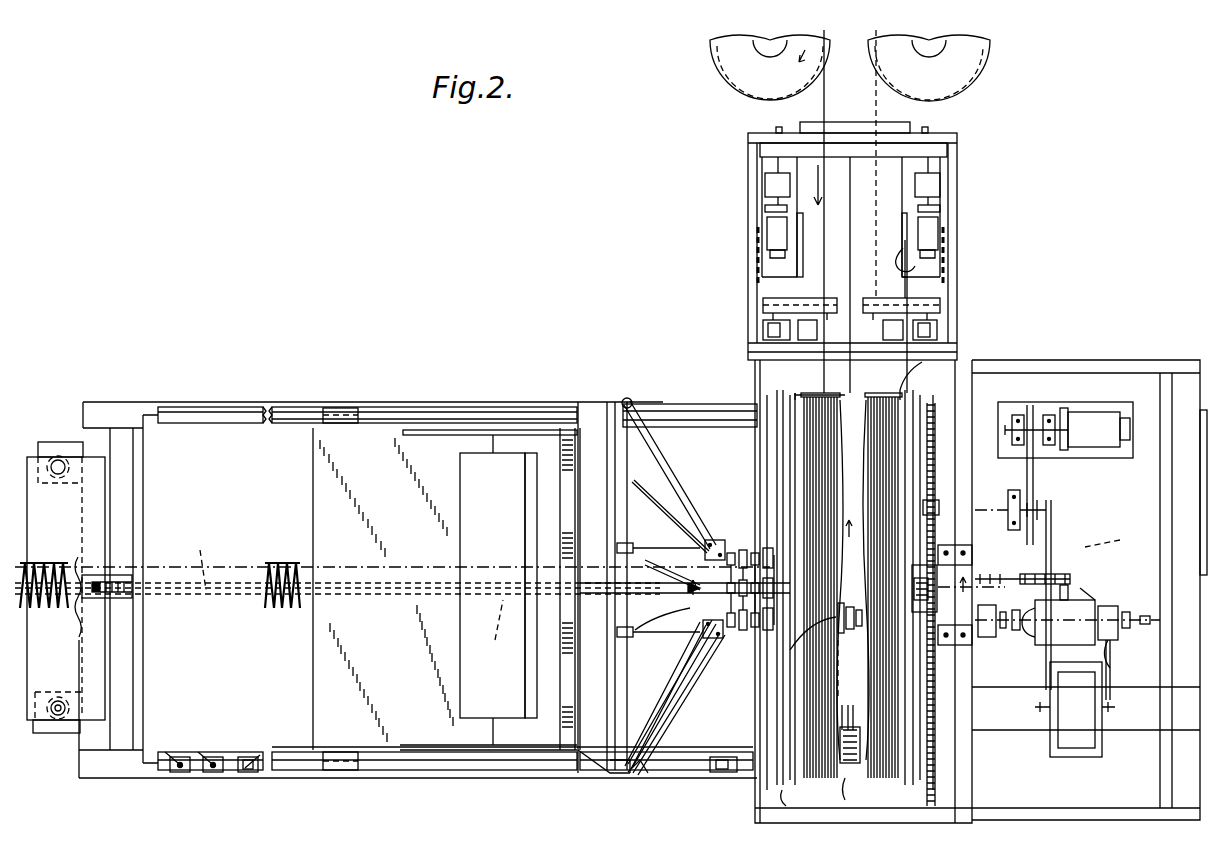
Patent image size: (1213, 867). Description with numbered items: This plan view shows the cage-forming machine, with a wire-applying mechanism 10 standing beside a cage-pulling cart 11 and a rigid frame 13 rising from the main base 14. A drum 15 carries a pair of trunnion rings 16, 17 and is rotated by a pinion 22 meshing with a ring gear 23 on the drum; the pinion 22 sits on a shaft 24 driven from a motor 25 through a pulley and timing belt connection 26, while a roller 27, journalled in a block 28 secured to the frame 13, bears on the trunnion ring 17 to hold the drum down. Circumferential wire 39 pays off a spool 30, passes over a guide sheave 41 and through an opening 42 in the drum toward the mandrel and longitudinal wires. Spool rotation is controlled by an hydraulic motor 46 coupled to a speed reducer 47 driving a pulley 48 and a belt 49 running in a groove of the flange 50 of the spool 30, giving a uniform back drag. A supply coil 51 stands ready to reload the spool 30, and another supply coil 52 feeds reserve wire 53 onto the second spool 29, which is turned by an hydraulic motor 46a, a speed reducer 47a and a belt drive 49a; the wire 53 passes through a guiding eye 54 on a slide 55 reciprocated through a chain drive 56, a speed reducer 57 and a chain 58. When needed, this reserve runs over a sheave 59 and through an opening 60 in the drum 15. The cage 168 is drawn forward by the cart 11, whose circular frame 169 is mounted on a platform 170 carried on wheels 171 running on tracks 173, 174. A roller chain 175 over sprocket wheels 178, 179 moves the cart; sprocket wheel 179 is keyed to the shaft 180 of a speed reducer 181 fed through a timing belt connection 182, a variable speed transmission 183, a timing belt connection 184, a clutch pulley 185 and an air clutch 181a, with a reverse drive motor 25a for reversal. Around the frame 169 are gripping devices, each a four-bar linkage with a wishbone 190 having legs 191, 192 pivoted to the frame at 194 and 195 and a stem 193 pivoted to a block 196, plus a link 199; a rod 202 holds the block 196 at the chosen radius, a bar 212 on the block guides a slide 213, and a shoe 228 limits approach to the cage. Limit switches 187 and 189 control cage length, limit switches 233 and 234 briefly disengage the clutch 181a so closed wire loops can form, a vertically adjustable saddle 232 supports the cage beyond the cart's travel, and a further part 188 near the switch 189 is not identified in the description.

The wire-applying mechanism 10 is at (1032, 283).
The cage-pulling cart 11 is at (595, 382).
The rigid frame 13 is at (982, 772).
The main base 14 is at (1145, 353).
The drum 15 is at (847, 770).
The trunnion ring 16 is at (785, 392).
The trunnion ring 17 is at (862, 785).
The pinion 22 is at (938, 500).
The ring gear 23 is at (930, 402).
The shaft 24 is at (1012, 505).
The motor 25 is at (1098, 418).
The reverse drive motor 25a is at (987, 640).
The pulley and timing belt connection 26 is at (1032, 410).
The roller 27 is at (922, 585).
The block 28 is at (962, 578).
The spool 29 is at (796, 803).
The spool 30 is at (928, 378).
The wire 39 is at (887, 443).
The guide sheave 41 is at (862, 617).
The opening 42 is at (858, 730).
The hydraulic motor 46 is at (937, 185).
The hydraulic motor 46a is at (768, 185).
The speed reducer 47 is at (930, 226).
The speed reducer 47a is at (770, 225).
The pulley 48 is at (940, 258).
The belt 49 is at (912, 280).
The belt drive 49a is at (760, 277).
The flange 50 is at (922, 362).
The supply coil 51 is at (992, 48).
The supply coil 52 is at (712, 50).
The circumferential wire 53 is at (822, 104).
The guiding eye 54 is at (830, 299).
The slide 55 is at (836, 305).
The chain drive 56 is at (760, 262).
The speed reducer 57 is at (772, 332).
The chain 58 is at (800, 325).
The sheave 59 is at (780, 670).
The opening 60 is at (845, 727).
The cage 168 is at (45, 563).
The circular frame 169 is at (591, 412).
The platform 170 is at (385, 762).
The wheels 171 is at (344, 407).
The track 173 is at (440, 770).
The track 174 is at (438, 407).
The roller chain 175 is at (152, 600).
The sprocket wheel 178 is at (100, 582).
The sprocket wheel 179 is at (1082, 590).
The shaft 180 is at (1067, 588).
The speed reducer 181 is at (1092, 605).
The air clutch 181a is at (1112, 642).
The timing belt connection 182 is at (1052, 535).
The variable speed transmission 183 is at (1080, 760).
The timing belt connection 184 is at (1105, 703).
The clutch pulley 185 is at (1112, 664).
The limit switch 187 is at (195, 775).
The bracket 188 is at (660, 771).
The limit switch 189 is at (720, 773).
The wishbone 190 is at (666, 412).
The leg 191 is at (640, 560).
The leg 192 is at (665, 623).
The stem 193 is at (705, 540).
The pivot 194 is at (617, 545).
The pivot 195 is at (627, 398).
The block 196 is at (688, 505).
The link 199 is at (672, 460).
The rod 202 is at (630, 500).
The bar 212 is at (760, 628).
The slide 213 is at (695, 690).
The shoe 228 is at (660, 580).
The saddle 232 is at (27, 458).
The limit switch 233 is at (255, 773).
The limit switch 234 is at (215, 774).